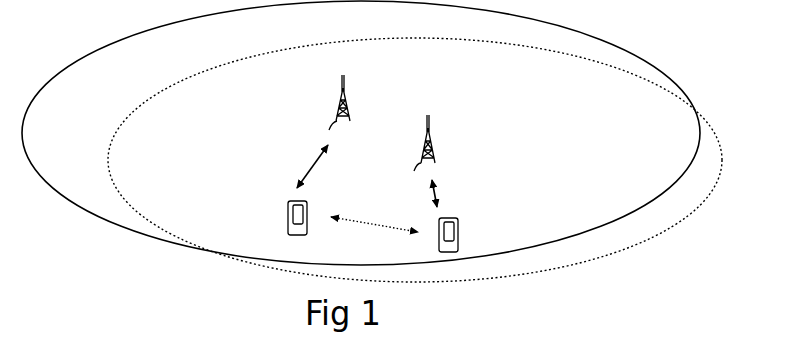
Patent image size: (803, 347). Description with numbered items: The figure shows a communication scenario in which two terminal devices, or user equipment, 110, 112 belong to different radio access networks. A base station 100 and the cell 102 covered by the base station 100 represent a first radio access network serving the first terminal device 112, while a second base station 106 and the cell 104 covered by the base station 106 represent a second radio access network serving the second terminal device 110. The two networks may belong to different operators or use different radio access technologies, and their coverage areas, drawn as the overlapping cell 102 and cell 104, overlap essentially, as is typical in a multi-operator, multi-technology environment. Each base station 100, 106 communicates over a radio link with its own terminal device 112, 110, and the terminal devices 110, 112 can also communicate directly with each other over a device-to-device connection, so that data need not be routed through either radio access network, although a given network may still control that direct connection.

The base station 100 is at (350, 121).
The cell 102 is at (277, 36).
The cell 104 is at (616, 256).
The base station 106 is at (435, 163).
The terminal device 110 is at (459, 241).
The terminal device 112 is at (308, 221).